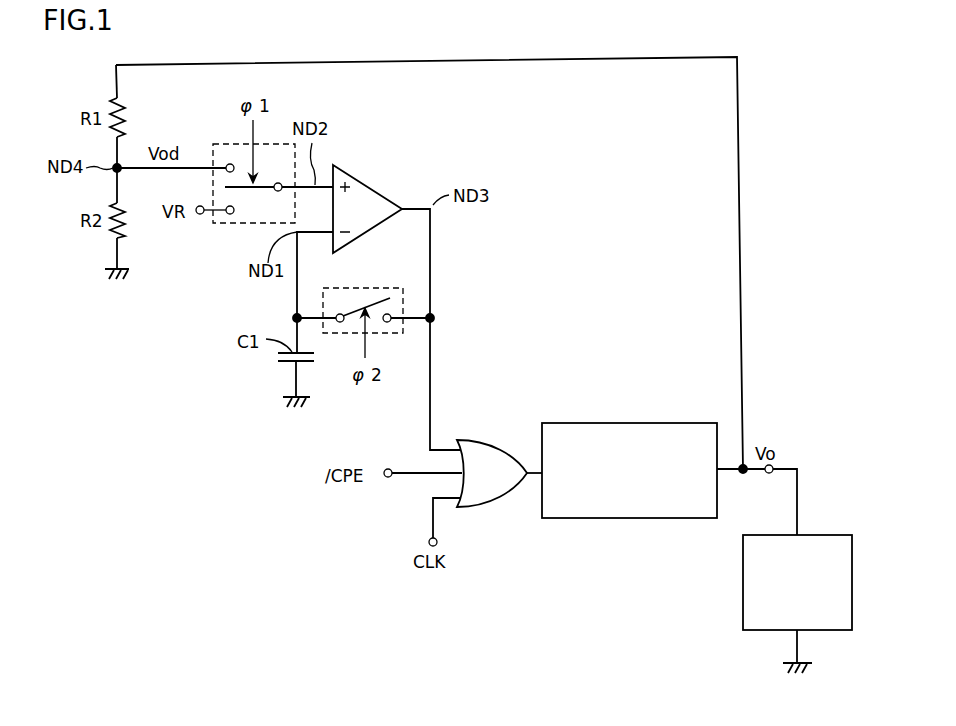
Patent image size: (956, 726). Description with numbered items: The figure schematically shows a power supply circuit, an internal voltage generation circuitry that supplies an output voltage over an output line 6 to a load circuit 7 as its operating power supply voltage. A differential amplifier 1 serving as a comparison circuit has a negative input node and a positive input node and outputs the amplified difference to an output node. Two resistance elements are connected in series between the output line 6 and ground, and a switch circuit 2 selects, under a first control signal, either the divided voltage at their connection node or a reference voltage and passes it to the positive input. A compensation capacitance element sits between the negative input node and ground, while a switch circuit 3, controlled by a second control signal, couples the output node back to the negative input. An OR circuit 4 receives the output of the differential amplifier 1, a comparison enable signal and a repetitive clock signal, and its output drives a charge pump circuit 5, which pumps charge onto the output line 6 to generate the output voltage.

The differential amplifier 1 is at (371, 185).
The switch circuit 2 is at (227, 224).
The switch circuit 3 is at (395, 288).
The OR circuit 4 is at (508, 447).
The charge pump circuit 5 is at (632, 423).
The output line 6 is at (769, 474).
The load circuit 7 is at (828, 535).